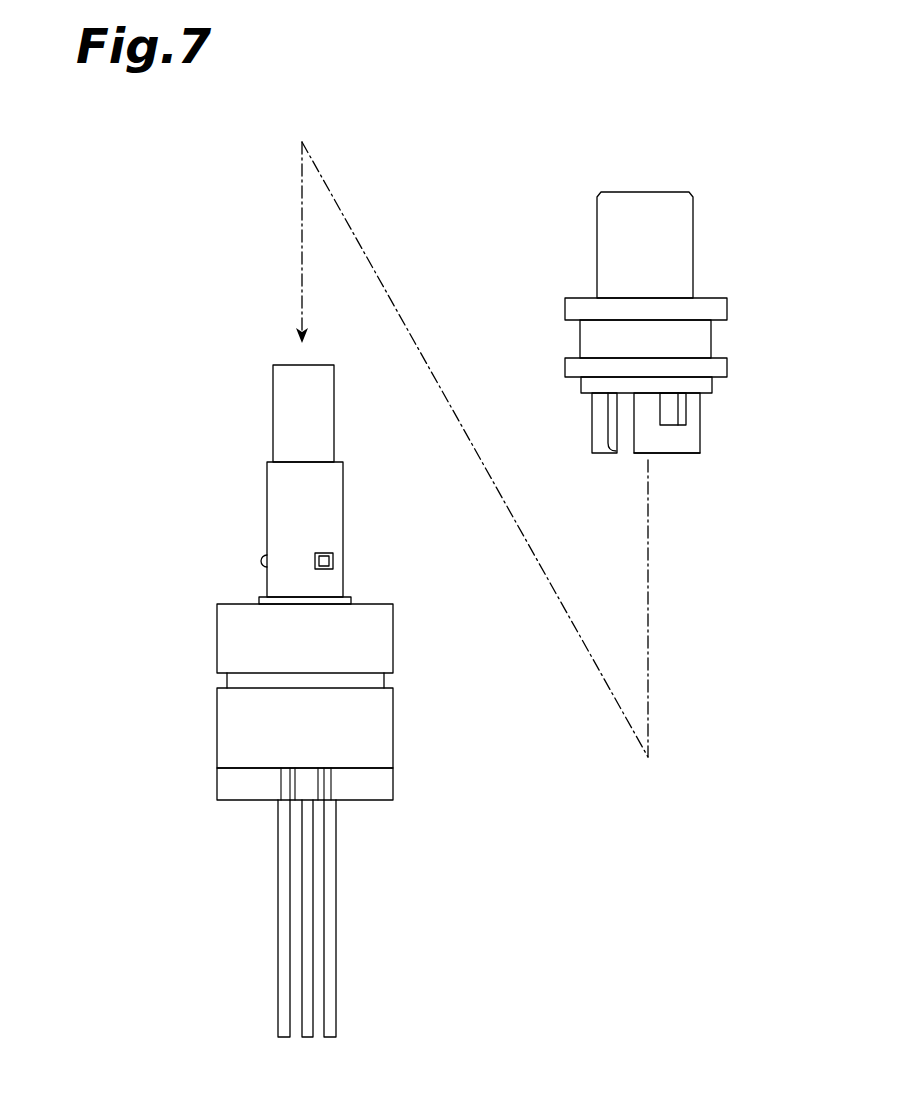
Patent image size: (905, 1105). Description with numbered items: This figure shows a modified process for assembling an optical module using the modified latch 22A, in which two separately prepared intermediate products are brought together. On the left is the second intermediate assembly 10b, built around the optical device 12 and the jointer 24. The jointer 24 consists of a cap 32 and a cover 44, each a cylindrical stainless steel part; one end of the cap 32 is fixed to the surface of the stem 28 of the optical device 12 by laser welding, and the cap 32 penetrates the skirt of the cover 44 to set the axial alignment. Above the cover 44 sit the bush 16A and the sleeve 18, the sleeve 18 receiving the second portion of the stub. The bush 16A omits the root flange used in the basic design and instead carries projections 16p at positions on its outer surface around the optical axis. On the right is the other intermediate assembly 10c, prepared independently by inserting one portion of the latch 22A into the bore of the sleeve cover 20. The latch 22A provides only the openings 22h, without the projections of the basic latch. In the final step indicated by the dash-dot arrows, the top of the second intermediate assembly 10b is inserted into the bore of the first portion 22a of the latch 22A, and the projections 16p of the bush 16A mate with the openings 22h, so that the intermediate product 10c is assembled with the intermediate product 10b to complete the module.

The second intermediate assembly 10b is at (84, 366).
The intermediate assembly 10c is at (822, 193).
The optical device 12 is at (194, 733).
The sleeve 18 is at (330, 413).
The bush 16A is at (335, 512).
The projections 16p is at (335, 562).
The cover 44 is at (384, 643).
The cap 32 is at (384, 721).
The stem 28 is at (384, 784).
The jointer 24 is at (476, 712).
The sleeve cover 20 is at (685, 232).
The latch 22A is at (722, 455).
The openings 22h is at (678, 407).
The first portion of the latch 22a is at (667, 453).